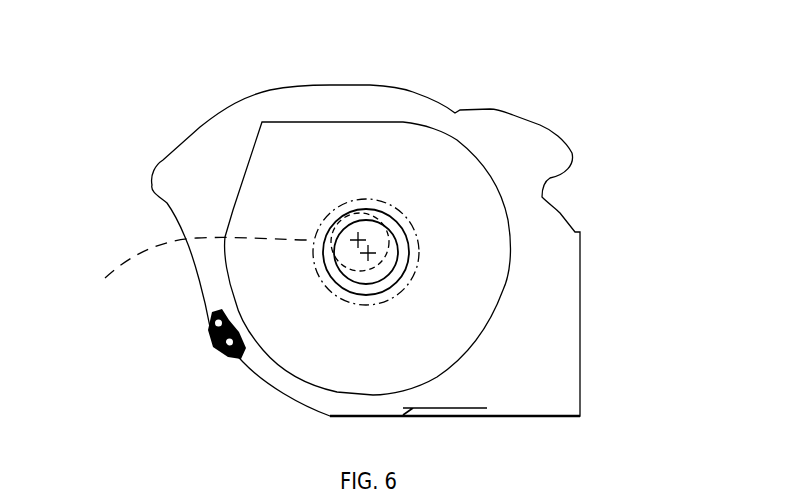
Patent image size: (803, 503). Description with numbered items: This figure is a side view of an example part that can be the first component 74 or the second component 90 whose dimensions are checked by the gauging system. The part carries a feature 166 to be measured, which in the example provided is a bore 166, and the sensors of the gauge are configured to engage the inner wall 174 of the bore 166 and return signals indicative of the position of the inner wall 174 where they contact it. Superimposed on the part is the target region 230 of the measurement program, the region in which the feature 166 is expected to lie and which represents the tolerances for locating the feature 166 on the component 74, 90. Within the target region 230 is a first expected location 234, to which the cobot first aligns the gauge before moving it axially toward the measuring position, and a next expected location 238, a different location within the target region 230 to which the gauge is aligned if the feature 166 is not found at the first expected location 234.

The first component 74 is at (200, 127).
The second component 90 is at (282, 234).
The target region 230 is at (188, 269).
The next expected location 238 is at (358, 240).
The first expected location 234 is at (368, 253).
The inner wall 174 is at (393, 265).
The feature 166 is at (399, 281).